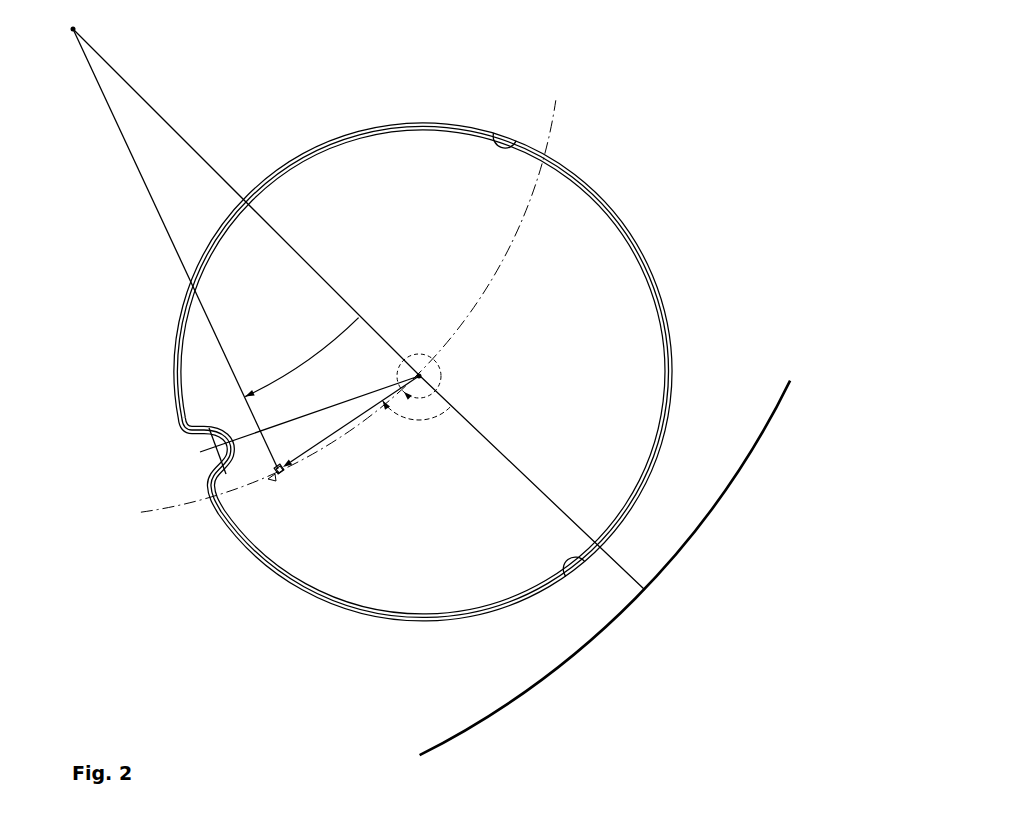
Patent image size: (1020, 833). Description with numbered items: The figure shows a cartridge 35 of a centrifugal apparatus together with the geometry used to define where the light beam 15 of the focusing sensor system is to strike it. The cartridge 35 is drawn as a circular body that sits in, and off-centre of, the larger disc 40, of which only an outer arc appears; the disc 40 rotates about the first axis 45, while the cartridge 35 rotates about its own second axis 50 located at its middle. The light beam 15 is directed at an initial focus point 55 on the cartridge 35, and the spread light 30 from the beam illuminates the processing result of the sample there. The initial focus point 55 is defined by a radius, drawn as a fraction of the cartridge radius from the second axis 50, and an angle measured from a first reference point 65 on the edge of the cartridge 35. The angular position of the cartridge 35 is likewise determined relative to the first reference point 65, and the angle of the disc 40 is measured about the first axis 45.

The light beam 15 is at (291, 489).
The spread light 30 is at (299, 480).
The cartridge 35 is at (638, 220).
The disc 40 is at (714, 524).
The first axis 45 is at (64, 50).
The second axis 50 is at (421, 358).
The initial focus point 55 is at (268, 490).
The first reference point 65 is at (188, 459).